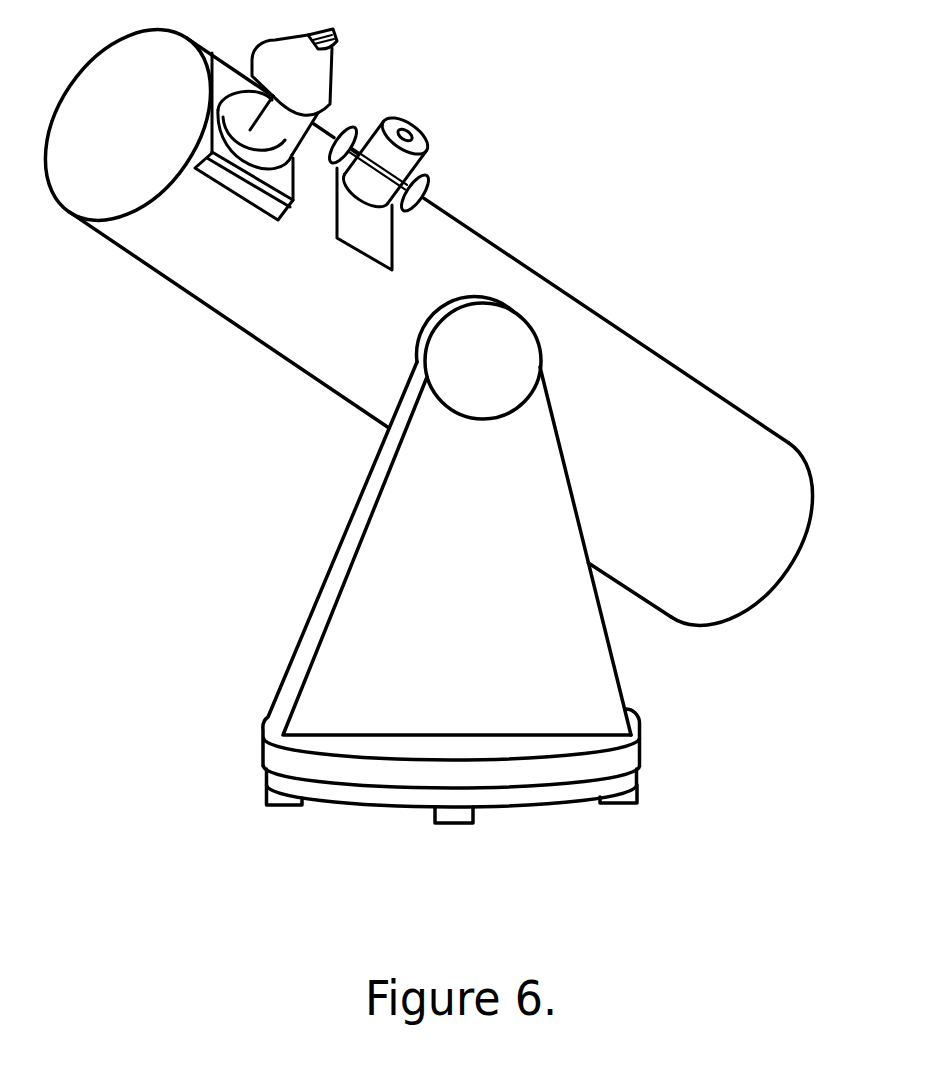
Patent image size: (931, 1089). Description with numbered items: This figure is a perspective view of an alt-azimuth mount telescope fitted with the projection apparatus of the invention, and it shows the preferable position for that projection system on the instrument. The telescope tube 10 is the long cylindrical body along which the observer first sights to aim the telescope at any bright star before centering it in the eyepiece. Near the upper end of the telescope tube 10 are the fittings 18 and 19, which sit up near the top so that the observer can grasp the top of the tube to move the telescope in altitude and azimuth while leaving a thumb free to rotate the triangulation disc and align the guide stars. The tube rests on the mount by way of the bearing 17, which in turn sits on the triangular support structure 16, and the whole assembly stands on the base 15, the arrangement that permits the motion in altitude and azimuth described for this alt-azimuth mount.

The telescope tube 10 is at (537, 272).
The ground board 15 is at (644, 795).
The rocker box 16 is at (262, 760).
The altitude bearing 17 is at (447, 409).
The focuser 18 is at (335, 72).
The finder scope 19 is at (433, 137).